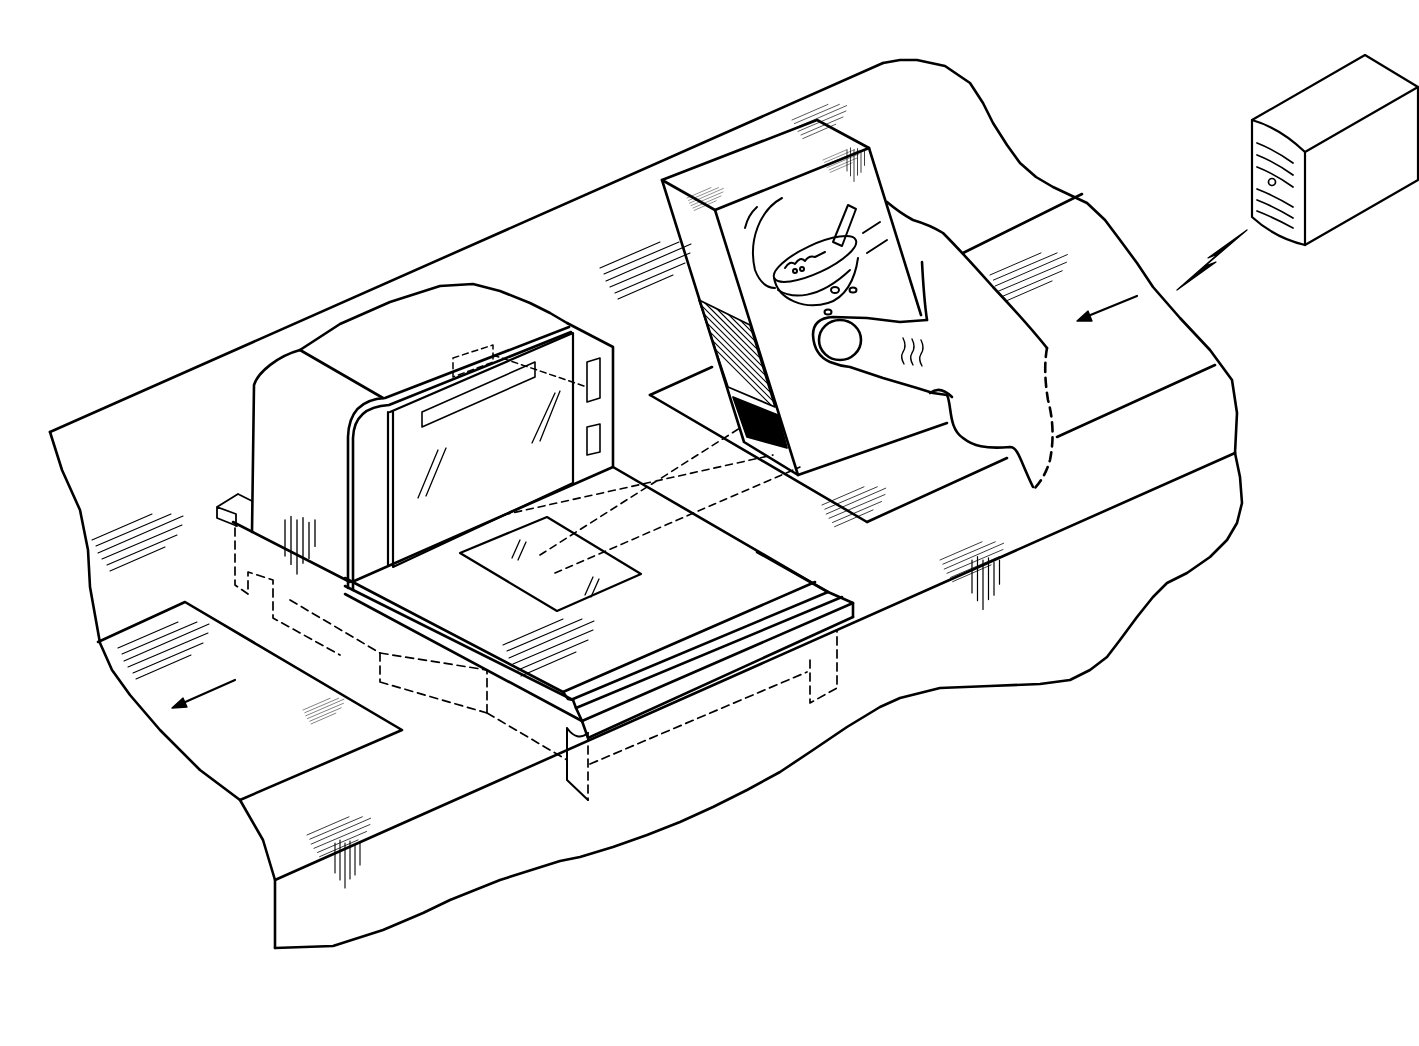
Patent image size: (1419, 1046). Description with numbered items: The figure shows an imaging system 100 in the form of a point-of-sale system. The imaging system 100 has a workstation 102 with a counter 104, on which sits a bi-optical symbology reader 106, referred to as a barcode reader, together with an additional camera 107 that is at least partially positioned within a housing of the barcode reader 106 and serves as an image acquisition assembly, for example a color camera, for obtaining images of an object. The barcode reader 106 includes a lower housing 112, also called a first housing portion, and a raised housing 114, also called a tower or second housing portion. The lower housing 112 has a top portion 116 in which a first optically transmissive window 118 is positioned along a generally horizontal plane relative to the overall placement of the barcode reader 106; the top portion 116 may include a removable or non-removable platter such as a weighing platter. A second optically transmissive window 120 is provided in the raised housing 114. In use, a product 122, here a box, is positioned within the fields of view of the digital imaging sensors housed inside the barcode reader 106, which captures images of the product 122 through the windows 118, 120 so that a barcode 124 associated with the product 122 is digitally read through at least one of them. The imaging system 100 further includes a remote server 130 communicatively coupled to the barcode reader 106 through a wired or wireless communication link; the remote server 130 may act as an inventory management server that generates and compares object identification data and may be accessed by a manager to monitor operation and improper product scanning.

The imaging system 100 is at (147, 331).
The workstation 102 is at (538, 198).
The counter 104 is at (963, 137).
The bi-optical symbology reader 106 is at (262, 467).
The camera 107 is at (463, 355).
The lower housing 112 is at (549, 795).
The raised housing 114 is at (352, 305).
The top portion 116 is at (540, 673).
The first optically transmissive window 118 is at (594, 587).
The second optically transmissive window 120 is at (413, 390).
The product 122 is at (822, 297).
The barcode 124 is at (785, 435).
The remote server 130 is at (1250, 168).